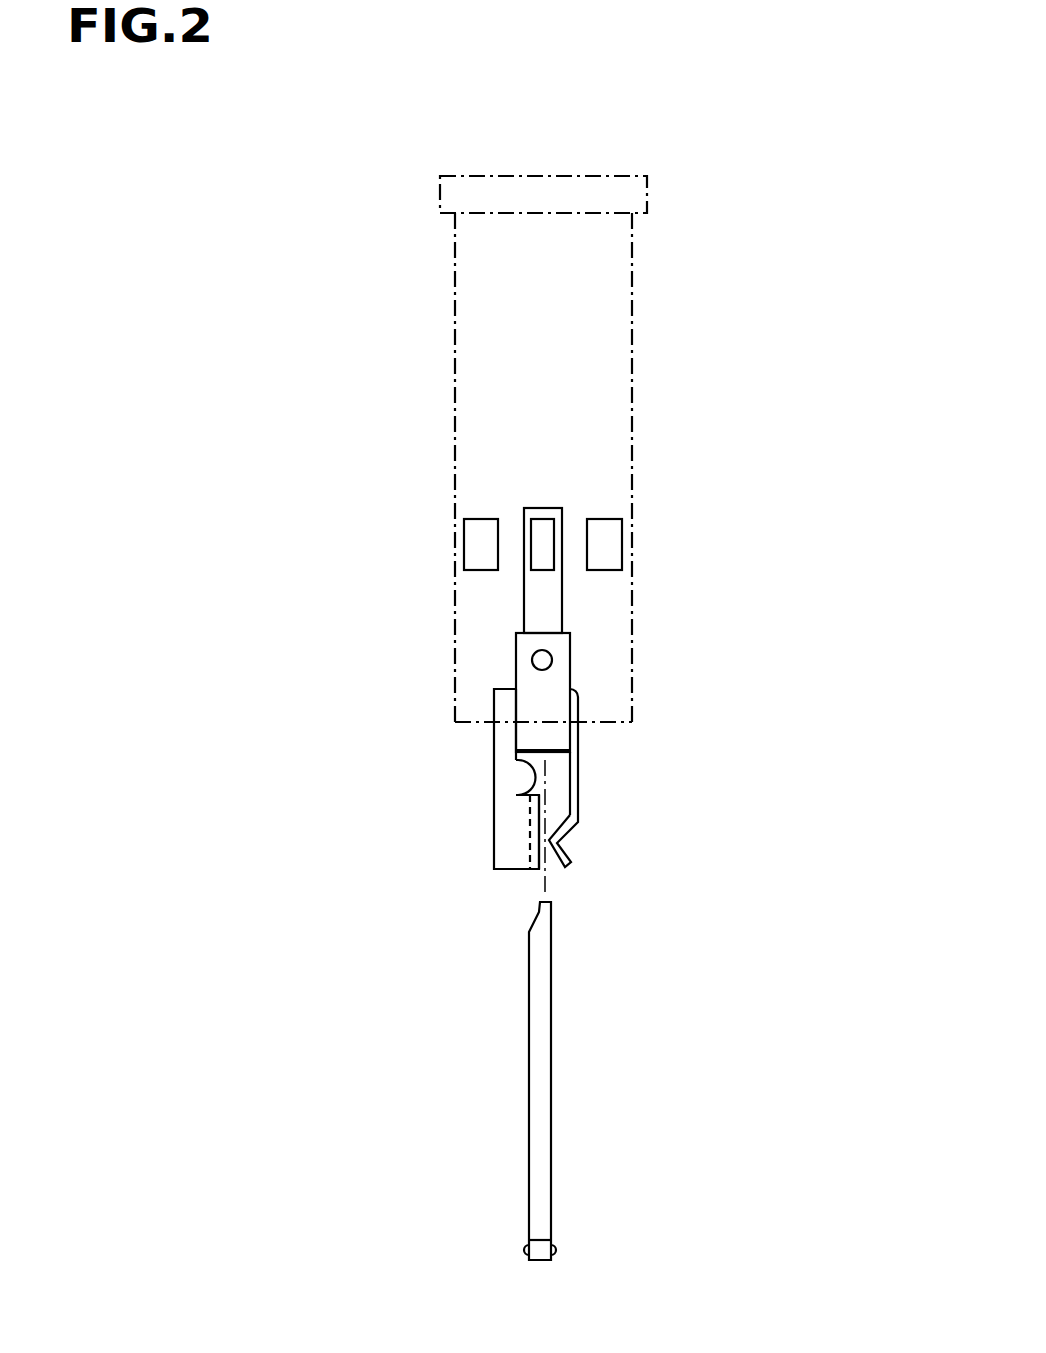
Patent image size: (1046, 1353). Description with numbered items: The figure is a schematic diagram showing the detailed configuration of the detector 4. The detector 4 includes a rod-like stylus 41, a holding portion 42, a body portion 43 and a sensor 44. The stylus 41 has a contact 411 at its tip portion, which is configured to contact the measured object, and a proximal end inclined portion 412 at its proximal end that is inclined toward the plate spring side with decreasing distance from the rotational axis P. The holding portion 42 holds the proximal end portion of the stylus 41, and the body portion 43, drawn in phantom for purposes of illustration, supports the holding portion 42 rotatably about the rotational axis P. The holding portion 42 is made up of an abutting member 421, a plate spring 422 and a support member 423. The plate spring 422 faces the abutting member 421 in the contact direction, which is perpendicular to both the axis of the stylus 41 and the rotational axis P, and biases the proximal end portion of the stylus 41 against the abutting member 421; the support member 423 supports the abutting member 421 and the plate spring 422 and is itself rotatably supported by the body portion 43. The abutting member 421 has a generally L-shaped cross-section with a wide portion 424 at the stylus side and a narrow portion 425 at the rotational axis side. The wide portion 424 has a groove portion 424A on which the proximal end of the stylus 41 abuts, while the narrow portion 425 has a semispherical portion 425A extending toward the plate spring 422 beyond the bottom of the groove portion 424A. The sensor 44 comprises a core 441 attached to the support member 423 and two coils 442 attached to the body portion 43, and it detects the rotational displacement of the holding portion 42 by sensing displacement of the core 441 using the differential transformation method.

The detector 4 is at (777, 427).
The stylus 41 is at (540, 1048).
The contact 411 is at (520, 1250).
The proximal end inclined portion 412 is at (535, 917).
The holding portion 42 is at (662, 753).
The abutting member 421 is at (460, 820).
The plate spring 422 is at (578, 793).
The support member 423 is at (520, 648).
The wide portion 424 is at (505, 835).
The groove portion 424A is at (532, 873).
The narrow portion 425 is at (503, 743).
The semispherical portion 425A is at (525, 780).
The body portion 43 is at (632, 268).
The sensor 44 is at (597, 433).
The core 441 is at (542, 530).
The coils 442 is at (477, 547).
The rotational axis P is at (552, 660).